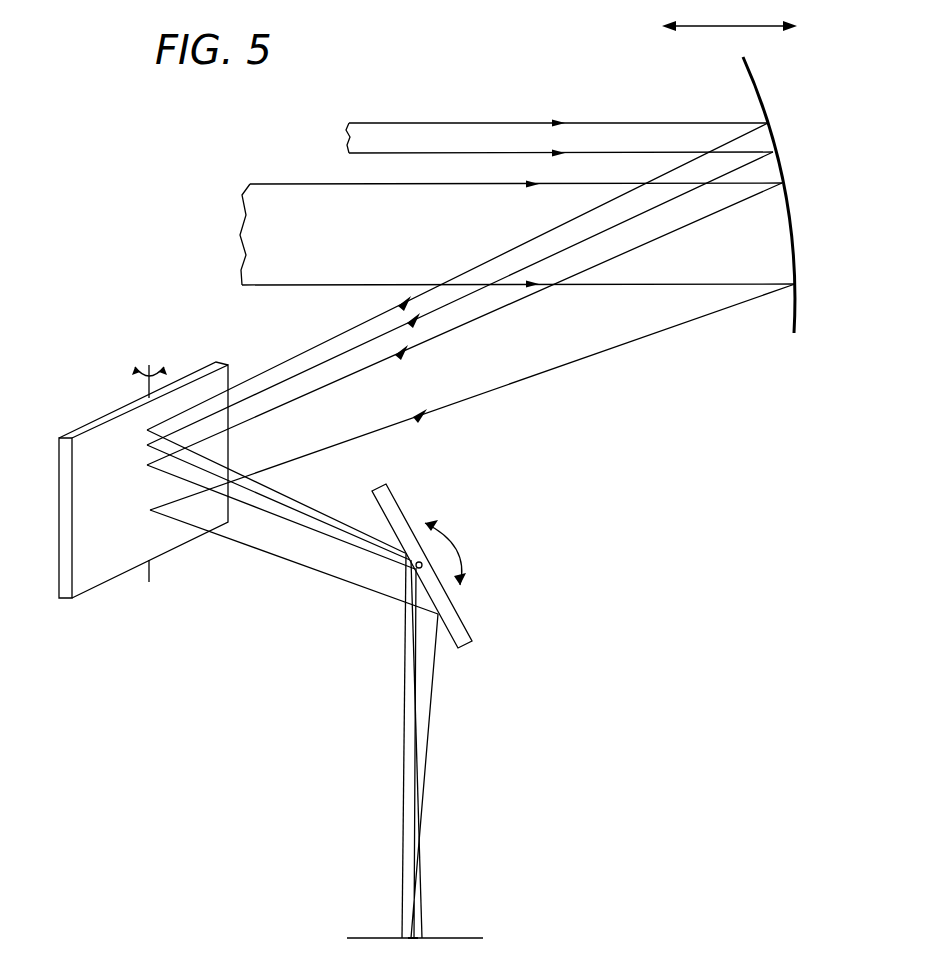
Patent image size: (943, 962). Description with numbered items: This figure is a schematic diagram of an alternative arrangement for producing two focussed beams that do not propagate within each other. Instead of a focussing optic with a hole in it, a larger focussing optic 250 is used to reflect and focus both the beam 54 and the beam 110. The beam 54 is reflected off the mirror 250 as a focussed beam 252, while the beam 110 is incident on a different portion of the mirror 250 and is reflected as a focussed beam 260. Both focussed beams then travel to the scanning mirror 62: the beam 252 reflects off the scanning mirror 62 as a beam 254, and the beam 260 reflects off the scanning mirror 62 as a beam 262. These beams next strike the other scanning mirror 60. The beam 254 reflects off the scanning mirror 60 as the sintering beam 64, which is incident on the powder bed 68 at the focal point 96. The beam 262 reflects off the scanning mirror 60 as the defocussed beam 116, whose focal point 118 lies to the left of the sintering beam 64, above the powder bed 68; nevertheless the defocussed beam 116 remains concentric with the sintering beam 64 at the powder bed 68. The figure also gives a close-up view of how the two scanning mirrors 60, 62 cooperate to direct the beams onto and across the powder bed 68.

The beam 54 is at (302, 203).
The beam 110 is at (474, 132).
The focussing optic 250 is at (795, 313).
The focussed beam 260 is at (362, 335).
The focussed beam 252 is at (523, 365).
The scanning mirror 62 is at (100, 421).
The beam 262 is at (275, 498).
The beam 254 is at (255, 537).
The scanning mirror 60 is at (388, 505).
The focal point 118 is at (405, 648).
The defocussed beam 116 is at (404, 822).
The sintering beam 64 is at (428, 712).
The powder bed 68 is at (368, 938).
The focal point 96 is at (412, 938).